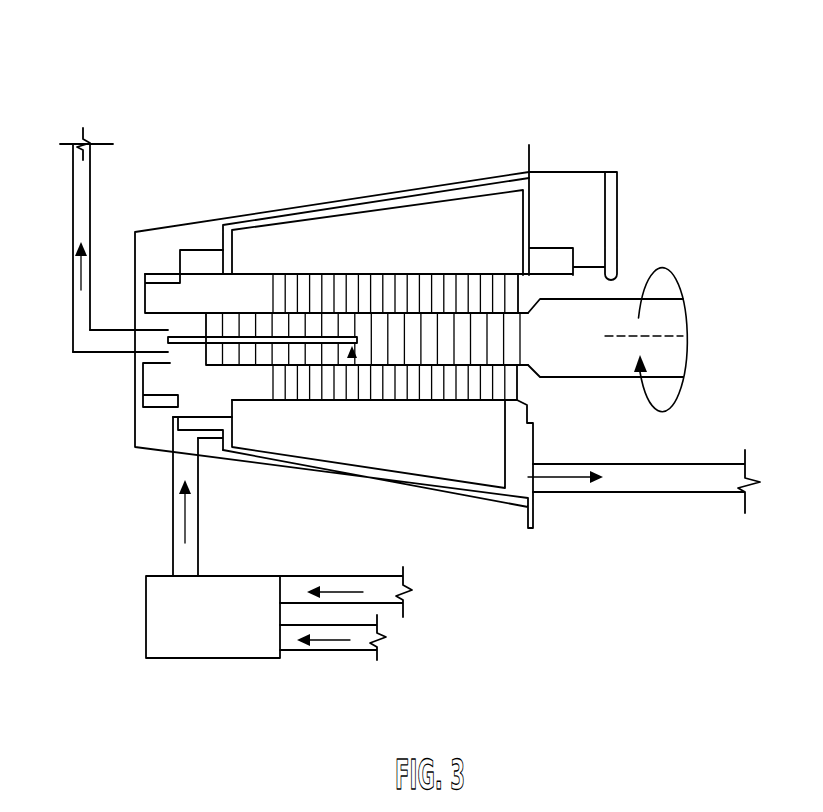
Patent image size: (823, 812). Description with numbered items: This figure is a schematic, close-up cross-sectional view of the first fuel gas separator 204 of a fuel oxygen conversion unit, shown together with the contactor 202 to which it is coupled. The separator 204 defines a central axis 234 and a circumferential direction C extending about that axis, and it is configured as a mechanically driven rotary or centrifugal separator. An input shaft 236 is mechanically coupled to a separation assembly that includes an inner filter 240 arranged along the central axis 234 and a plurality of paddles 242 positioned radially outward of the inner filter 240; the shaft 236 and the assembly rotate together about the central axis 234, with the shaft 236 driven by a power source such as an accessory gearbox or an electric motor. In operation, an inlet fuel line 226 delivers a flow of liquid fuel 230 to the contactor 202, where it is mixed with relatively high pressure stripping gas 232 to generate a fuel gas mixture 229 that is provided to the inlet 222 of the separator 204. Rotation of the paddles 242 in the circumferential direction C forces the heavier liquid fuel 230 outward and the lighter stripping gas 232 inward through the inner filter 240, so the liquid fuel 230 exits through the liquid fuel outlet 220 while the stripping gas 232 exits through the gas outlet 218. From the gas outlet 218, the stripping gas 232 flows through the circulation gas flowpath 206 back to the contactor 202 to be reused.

The contactor 202 is at (185, 660).
The fuel gas separator 204 is at (363, 110).
The circulation gas flowpath 206 is at (85, 203).
The gas outlet 218 is at (130, 347).
The liquid fuel outlet 220 is at (621, 482).
The inlet 222 is at (188, 461).
The inlet fuel line 226 is at (352, 652).
The fuel gas mixture 229 is at (185, 515).
The liquid fuel 230 is at (328, 641).
The stripping gas 232 is at (73, 268).
The central axis 234 is at (672, 333).
The input shaft 236 is at (627, 296).
The inner filter 240 is at (455, 412).
The paddles 242 is at (453, 251).
The circumferential direction C is at (688, 363).